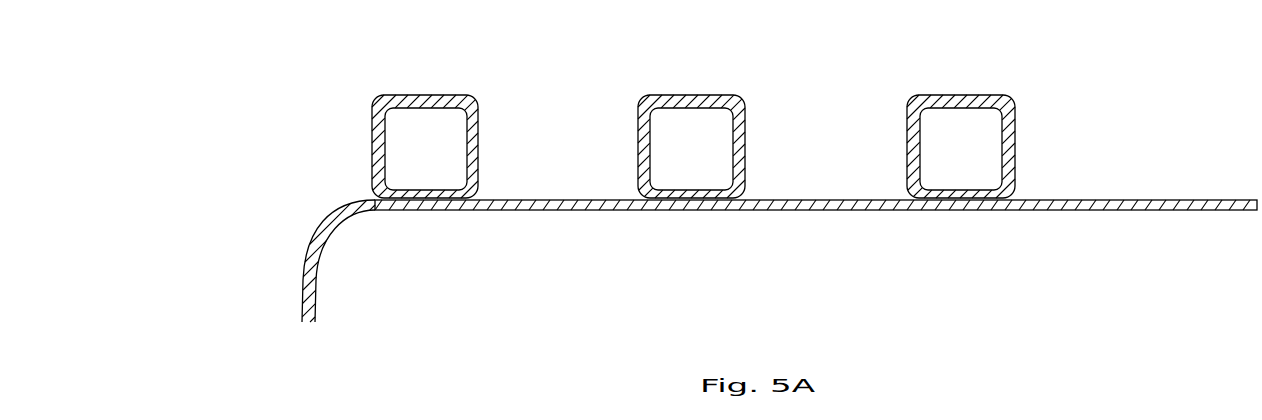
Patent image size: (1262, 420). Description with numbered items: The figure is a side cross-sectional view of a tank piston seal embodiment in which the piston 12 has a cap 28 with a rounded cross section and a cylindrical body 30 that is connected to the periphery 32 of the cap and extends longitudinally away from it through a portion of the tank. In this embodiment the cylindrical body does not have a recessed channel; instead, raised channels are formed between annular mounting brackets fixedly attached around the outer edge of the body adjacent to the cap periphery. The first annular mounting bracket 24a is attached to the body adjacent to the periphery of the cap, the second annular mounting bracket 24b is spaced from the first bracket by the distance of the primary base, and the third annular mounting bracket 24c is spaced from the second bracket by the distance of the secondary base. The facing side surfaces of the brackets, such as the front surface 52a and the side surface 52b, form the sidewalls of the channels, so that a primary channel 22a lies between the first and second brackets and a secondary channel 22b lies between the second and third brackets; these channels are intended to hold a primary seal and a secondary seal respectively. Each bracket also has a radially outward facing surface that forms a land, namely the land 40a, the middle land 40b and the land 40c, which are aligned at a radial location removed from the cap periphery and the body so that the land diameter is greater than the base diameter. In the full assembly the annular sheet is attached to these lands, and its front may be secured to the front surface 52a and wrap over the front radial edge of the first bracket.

The piston 12 is at (218, 118).
The primary channel 22a is at (537, 150).
The secondary channel 22b is at (848, 143).
The first annular mounting bracket 24a is at (412, 143).
The second annular mounting bracket 24b is at (687, 157).
The third annular mounting bracket 24c is at (958, 148).
The cap 28 is at (320, 243).
The cylindrical body 30 is at (1152, 212).
The periphery 32 is at (373, 198).
The land 40a is at (427, 102).
The middle land 40b is at (687, 100).
The land 40c is at (960, 98).
The front surface 52a is at (375, 140).
The side surface 52b is at (639, 152).